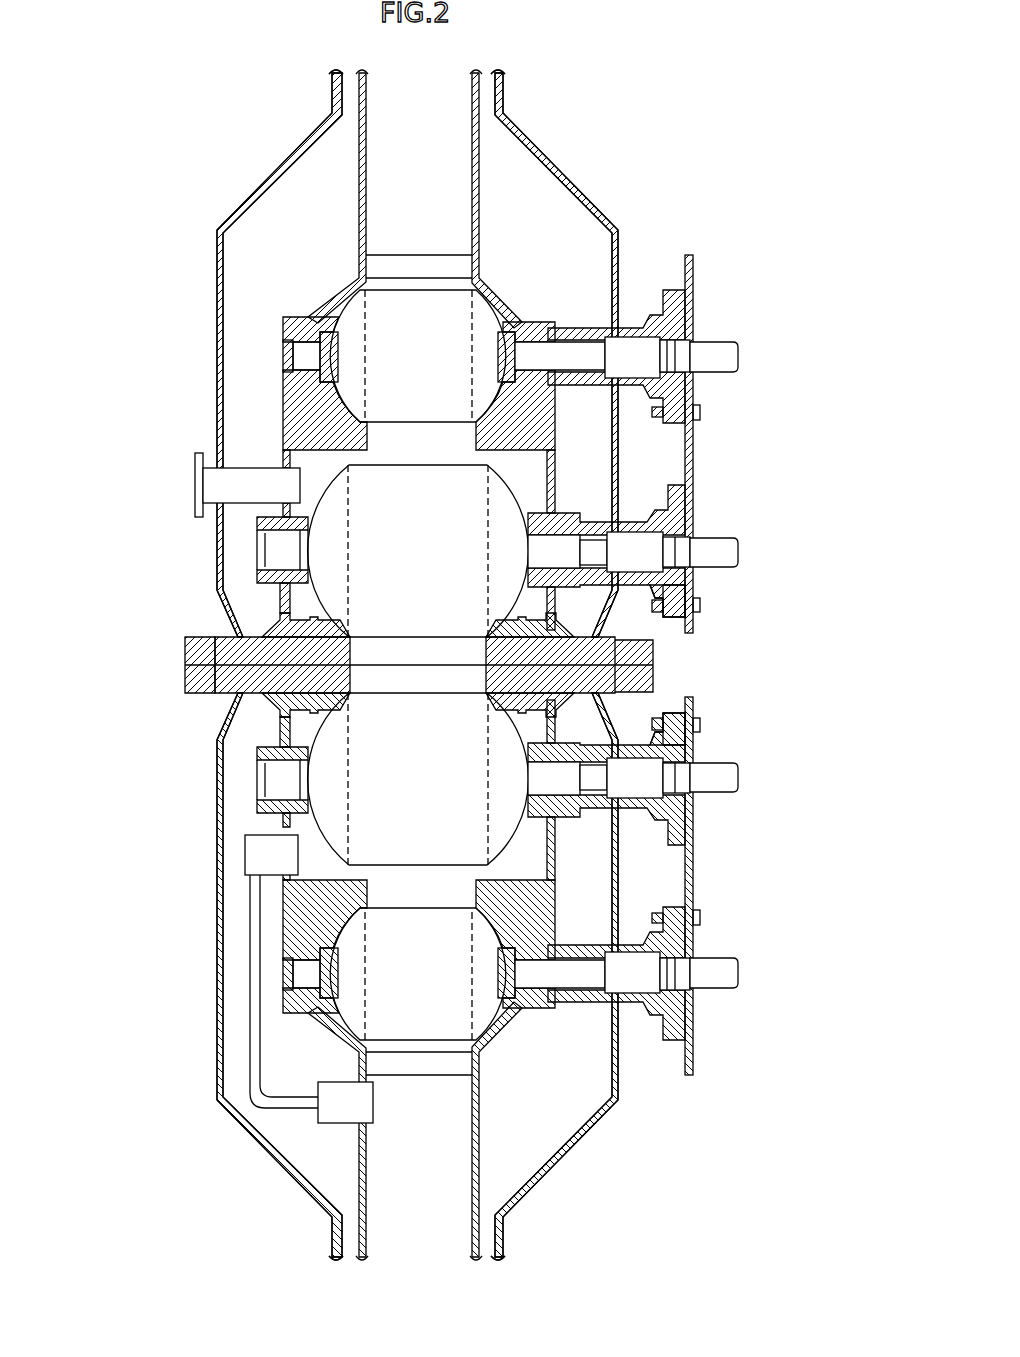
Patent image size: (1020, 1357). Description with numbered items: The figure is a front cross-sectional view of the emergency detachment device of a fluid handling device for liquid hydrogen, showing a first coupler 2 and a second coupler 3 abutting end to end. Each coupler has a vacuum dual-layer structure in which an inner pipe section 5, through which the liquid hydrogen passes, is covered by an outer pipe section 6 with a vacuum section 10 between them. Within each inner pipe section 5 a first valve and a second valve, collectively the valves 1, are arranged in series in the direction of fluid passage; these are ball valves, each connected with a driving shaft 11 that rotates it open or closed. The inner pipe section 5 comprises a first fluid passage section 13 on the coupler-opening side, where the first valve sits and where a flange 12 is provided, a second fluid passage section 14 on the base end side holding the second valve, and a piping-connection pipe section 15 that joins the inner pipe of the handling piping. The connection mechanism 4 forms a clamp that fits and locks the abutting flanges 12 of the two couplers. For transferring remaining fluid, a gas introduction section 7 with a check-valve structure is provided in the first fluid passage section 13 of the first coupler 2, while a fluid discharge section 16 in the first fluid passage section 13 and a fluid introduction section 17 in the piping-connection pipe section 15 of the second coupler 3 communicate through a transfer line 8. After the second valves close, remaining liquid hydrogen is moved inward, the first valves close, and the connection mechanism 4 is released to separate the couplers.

The valve 1 is at (487, 318).
The first coupler 2 is at (608, 185).
The second coupler 3 is at (218, 1121).
The connection mechanism 4 is at (185, 652).
The inner pipe section 5 is at (283, 395).
The outer pipe section 6 is at (217, 292).
The gas introduction section 7 is at (207, 485).
The tube 8 is at (255, 915).
The vacuum section 10 is at (243, 343).
The driving shaft 11 is at (722, 347).
The flange 12 is at (653, 672).
The first fluid passage section 13 is at (527, 467).
The second fluid passage section 14 is at (507, 402).
The piping-connection pipe section 15 is at (372, 213).
The fluid discharge section 16 is at (255, 857).
The fluid introduction section 17 is at (335, 1115).